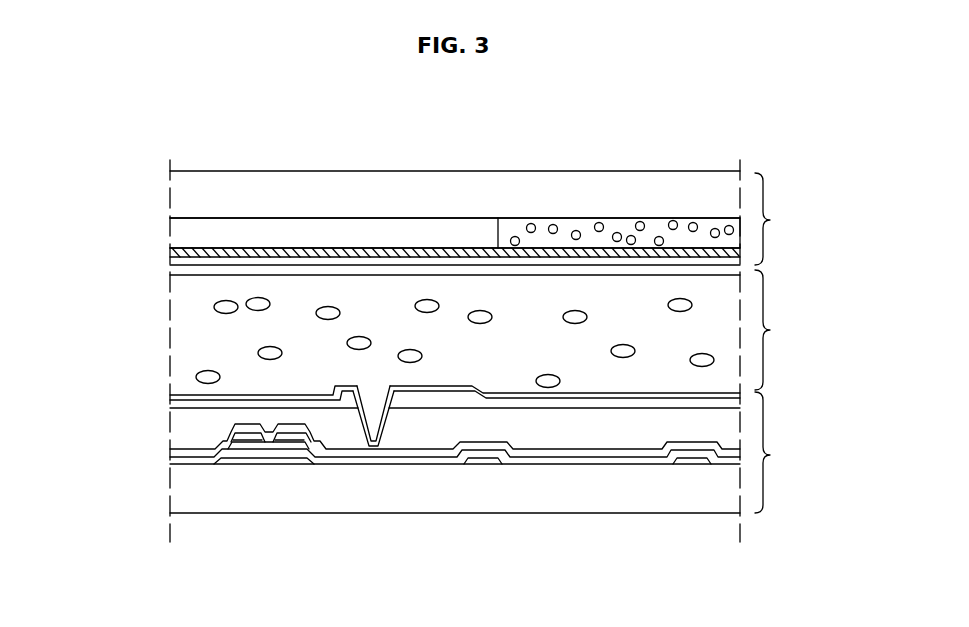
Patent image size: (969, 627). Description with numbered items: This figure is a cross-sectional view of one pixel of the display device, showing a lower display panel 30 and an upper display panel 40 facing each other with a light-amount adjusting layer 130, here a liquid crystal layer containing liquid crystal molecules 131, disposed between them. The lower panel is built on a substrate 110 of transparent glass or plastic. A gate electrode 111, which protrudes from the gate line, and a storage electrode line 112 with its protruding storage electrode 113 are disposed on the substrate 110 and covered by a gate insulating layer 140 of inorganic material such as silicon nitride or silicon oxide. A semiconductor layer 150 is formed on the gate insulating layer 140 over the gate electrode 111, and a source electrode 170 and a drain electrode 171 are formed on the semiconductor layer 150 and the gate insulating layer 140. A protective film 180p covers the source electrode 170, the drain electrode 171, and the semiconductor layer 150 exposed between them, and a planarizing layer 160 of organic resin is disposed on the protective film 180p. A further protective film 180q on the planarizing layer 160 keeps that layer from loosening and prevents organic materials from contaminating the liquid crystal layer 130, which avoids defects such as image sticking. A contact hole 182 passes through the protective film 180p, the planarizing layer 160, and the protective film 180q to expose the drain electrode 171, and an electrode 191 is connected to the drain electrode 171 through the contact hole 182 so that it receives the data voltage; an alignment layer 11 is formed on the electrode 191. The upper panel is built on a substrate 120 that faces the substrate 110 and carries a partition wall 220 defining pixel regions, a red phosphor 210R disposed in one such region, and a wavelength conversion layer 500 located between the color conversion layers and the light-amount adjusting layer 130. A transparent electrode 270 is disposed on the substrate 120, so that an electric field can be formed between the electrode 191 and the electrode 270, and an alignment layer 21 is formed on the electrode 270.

The substrate 120 is at (656, 192).
The partition wall 220 is at (366, 230).
The red phosphor 210R is at (574, 231).
The wavelength conversion layer 500 is at (277, 247).
The electrode 270 is at (445, 260).
The alignment layer 21 is at (383, 270).
The upper display panel 40 is at (784, 219).
The light-amount adjusting layer 130 is at (787, 330).
The lower display panel 30 is at (784, 452).
The liquid crystal molecules 131 is at (224, 307).
The alignment layer 11 is at (178, 396).
The electrode 191 is at (441, 392).
The contact hole 182 is at (372, 420).
The protective film 180q is at (172, 407).
The protective film 180p is at (595, 451).
The gate insulating layer 140 is at (393, 460).
The semiconductor layer 150 is at (289, 443).
The planarizing layer 160 is at (447, 440).
The source electrode 170 is at (248, 436).
The drain electrode 171 is at (337, 449).
The gate electrode 111 is at (230, 463).
The storage electrode line 112 is at (484, 461).
The storage electrode 113 is at (701, 461).
The substrate 110 is at (635, 497).